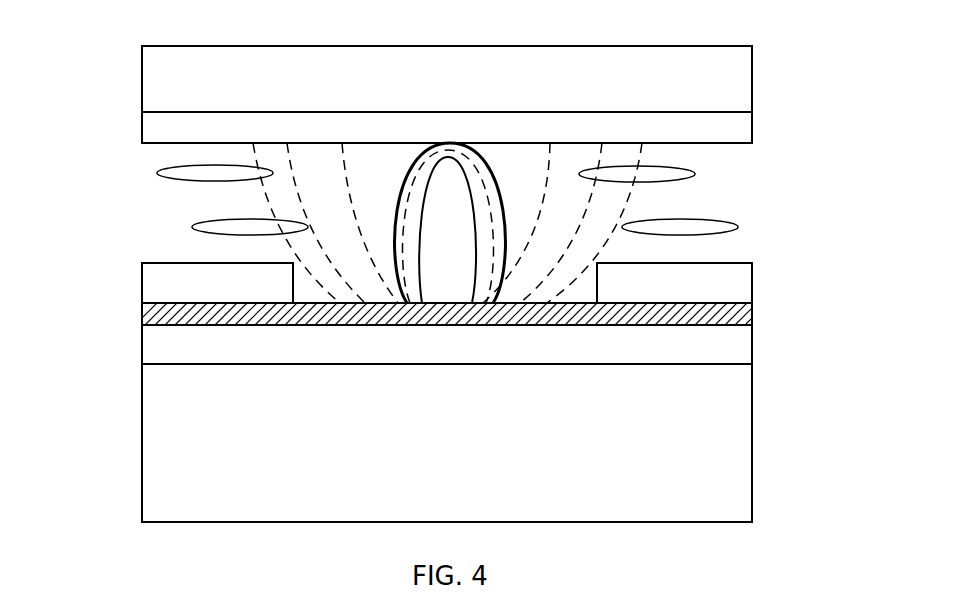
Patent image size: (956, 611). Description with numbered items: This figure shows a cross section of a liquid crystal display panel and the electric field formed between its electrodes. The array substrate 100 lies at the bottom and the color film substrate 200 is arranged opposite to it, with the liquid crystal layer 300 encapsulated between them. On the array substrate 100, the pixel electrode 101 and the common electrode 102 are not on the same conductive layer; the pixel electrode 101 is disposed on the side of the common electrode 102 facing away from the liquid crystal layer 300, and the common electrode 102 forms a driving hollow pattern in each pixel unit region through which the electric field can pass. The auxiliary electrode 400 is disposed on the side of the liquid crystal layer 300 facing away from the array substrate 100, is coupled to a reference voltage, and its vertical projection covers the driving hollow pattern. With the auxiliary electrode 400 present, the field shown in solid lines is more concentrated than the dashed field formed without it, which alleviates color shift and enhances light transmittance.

The array substrate 100 is at (217, 410).
The pixel electrode 101 is at (752, 342).
The common electrode 102 is at (188, 288).
The color film substrate 200 is at (708, 90).
The liquid crystal layer 300 is at (210, 213).
The auxiliary electrode 400 is at (713, 130).